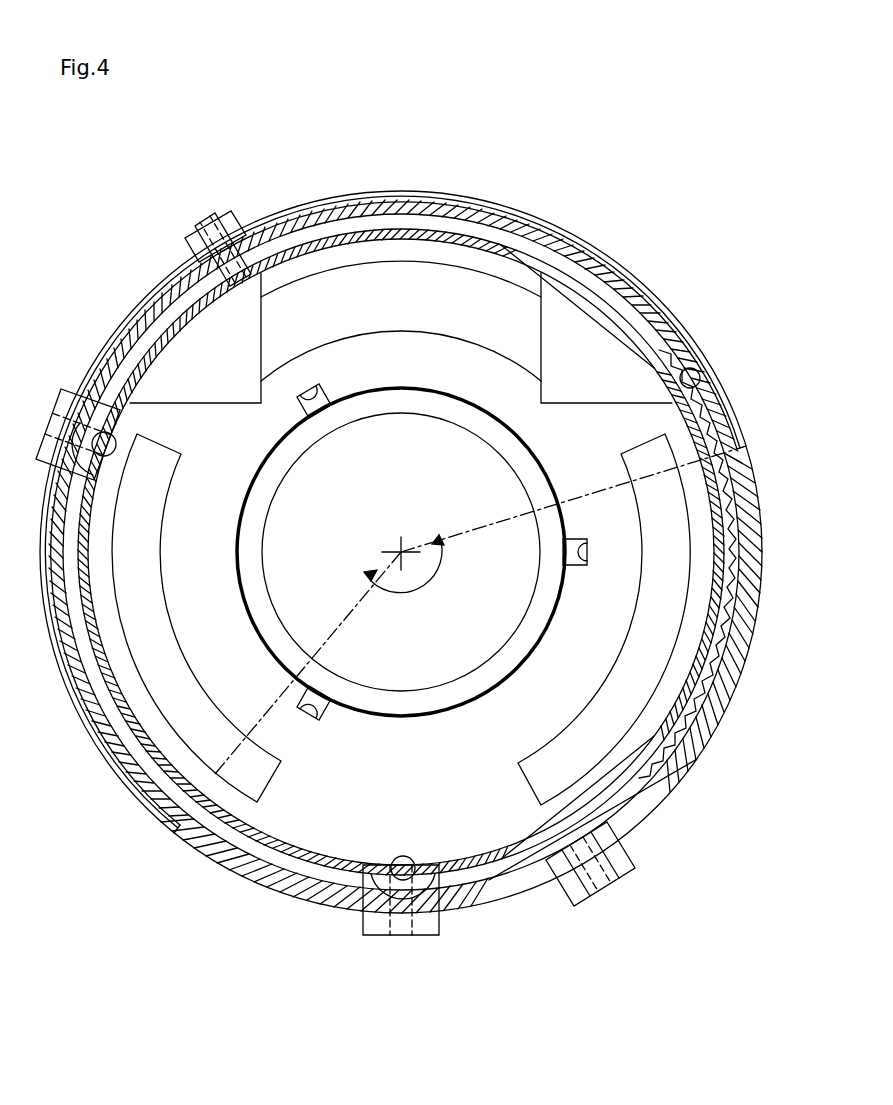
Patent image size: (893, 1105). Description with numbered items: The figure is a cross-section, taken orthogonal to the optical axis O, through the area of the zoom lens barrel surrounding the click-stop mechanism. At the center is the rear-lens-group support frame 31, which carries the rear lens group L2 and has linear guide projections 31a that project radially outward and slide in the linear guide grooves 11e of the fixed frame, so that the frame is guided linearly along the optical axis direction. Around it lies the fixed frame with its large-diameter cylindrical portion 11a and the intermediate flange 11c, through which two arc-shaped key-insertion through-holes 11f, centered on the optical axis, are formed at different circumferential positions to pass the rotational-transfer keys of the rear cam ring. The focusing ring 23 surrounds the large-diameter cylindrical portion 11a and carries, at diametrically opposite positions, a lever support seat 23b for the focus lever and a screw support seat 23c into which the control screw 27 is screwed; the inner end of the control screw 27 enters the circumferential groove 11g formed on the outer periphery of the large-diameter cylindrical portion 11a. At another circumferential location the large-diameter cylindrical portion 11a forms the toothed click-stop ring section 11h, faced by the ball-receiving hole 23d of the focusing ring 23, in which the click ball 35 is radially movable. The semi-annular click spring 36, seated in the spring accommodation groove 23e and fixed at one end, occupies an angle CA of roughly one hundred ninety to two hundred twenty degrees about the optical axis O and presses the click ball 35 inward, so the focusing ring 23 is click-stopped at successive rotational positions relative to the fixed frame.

The focusing ring 23 is at (285, 905).
The lever support seat 23b is at (640, 862).
The screw support seat 23c is at (190, 252).
The ball-receiving hole 23d is at (700, 382).
The spring accommodation groove 23e is at (745, 448).
The control screw 27 is at (236, 222).
The click ball 35 is at (695, 372).
The click spring 36 is at (725, 405).
The large-diameter cylindrical portion 11a is at (303, 242).
The intermediate flange 11c is at (127, 730).
The linear guide groove 11e is at (330, 395).
The key-insertion through-hole 11f is at (137, 532).
The circumferential groove 11g is at (650, 298).
The click-stop ring section 11h is at (695, 715).
The rear-lens-group support frame 31 is at (270, 623).
The linear guide projection 31a is at (302, 415).
The rear lens group L2 is at (417, 622).
The optical axis O is at (412, 563).
The angle CA is at (404, 543).